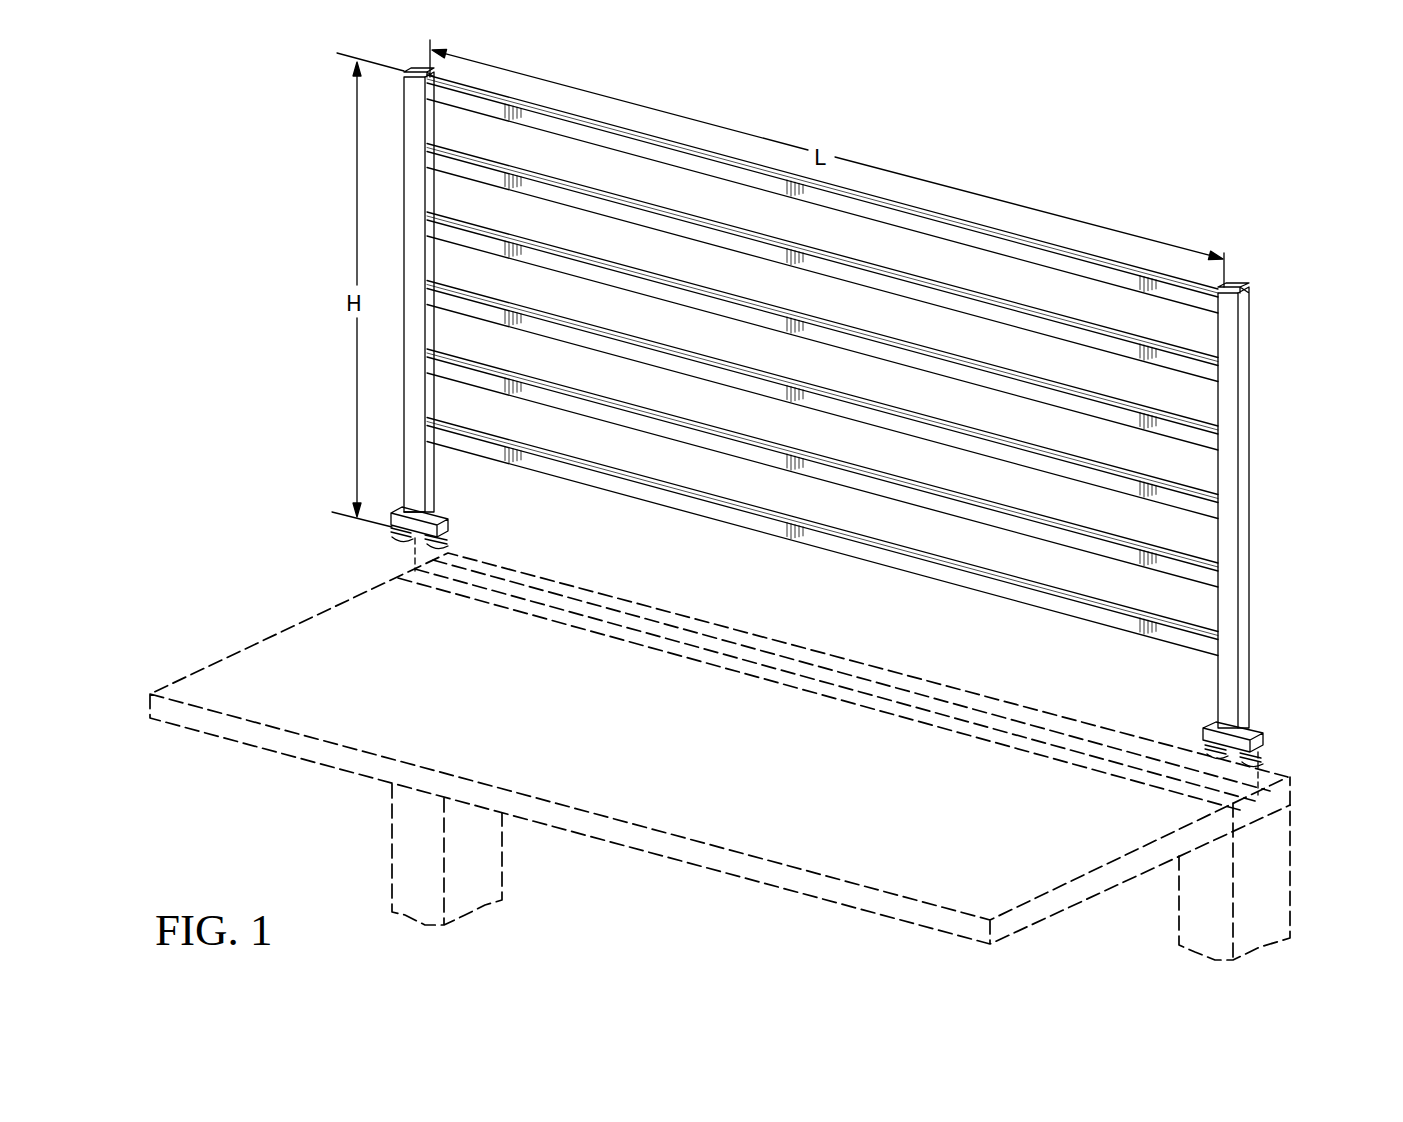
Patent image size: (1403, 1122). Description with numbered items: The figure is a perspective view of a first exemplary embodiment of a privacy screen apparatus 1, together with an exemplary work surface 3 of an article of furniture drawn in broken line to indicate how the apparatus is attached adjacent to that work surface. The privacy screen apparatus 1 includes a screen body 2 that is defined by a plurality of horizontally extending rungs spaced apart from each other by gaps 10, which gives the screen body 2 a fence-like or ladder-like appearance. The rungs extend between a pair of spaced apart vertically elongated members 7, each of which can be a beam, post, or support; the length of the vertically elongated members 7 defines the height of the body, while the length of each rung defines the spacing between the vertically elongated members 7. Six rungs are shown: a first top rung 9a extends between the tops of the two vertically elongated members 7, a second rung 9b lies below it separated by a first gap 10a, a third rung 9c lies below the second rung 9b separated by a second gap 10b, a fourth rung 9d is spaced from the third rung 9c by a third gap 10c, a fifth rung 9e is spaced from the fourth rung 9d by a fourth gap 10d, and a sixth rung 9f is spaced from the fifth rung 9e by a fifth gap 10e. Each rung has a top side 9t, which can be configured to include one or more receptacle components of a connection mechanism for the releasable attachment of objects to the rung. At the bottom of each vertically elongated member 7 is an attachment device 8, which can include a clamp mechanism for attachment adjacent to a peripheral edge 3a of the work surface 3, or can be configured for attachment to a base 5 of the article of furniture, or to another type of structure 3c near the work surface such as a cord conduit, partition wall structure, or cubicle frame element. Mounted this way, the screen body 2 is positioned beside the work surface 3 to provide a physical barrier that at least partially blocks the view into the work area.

The privacy screen apparatus 1 is at (324, 371).
The screen body 2 is at (847, 580).
The work surface 3 is at (672, 876).
The peripheral edge 3a is at (532, 618).
The structure 3c is at (727, 656).
The base 5 is at (1273, 841).
The vertically elongated member 7 is at (418, 248).
The attachment device 8 is at (469, 518).
The first top rung 9a is at (695, 165).
The second rung 9b is at (990, 313).
The third rung 9c is at (735, 290).
The fourth rung 9d is at (878, 400).
The fifth rung 9e is at (935, 483).
The sixth rung 9f is at (1012, 586).
The top side 9t is at (872, 196).
The gap 10 is at (1103, 308).
The first gap 10a is at (556, 158).
The second gap 10b is at (556, 226).
The third gap 10c is at (556, 295).
The fourth gap 10d is at (556, 363).
The fifth gap 10e is at (556, 431).